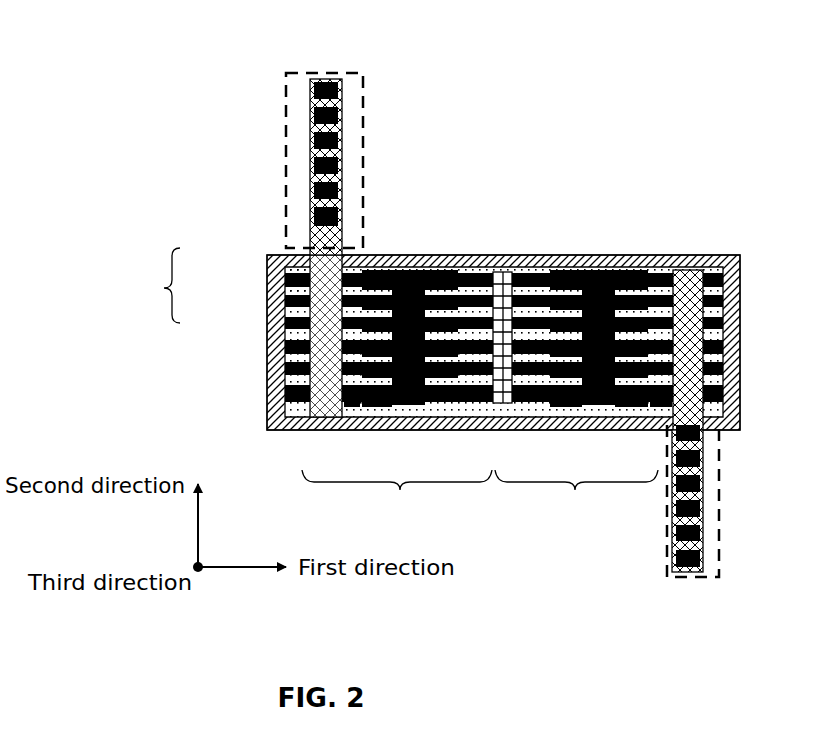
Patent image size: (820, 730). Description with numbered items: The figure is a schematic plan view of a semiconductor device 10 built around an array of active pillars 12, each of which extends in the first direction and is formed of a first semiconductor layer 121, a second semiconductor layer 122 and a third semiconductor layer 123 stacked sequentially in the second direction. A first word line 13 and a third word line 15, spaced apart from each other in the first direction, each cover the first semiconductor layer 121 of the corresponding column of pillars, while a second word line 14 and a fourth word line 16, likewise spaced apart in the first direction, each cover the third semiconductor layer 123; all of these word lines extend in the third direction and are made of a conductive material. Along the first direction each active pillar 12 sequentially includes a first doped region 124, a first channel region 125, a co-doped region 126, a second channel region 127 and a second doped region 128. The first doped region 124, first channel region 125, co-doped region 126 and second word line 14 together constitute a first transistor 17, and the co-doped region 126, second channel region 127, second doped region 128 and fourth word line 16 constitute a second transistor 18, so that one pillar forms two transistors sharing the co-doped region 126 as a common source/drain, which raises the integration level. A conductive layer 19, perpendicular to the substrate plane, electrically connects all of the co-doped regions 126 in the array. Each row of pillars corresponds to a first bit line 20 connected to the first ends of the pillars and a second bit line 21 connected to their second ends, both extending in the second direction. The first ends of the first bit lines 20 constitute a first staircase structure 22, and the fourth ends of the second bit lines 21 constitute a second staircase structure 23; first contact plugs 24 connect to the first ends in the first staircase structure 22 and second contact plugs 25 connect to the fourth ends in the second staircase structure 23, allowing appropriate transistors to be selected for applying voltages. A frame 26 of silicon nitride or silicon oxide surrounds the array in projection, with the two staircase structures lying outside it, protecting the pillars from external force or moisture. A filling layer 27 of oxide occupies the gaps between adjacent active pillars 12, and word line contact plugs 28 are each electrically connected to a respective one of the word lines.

The semiconductor device 10 is at (156, 50).
The active pillar 12 is at (160, 288).
The first semiconductor layer 121 is at (283, 291).
The second semiconductor layer 122 is at (283, 283).
The third semiconductor layer 123 is at (283, 276).
The first word line 13 is at (340, 386).
The second word line 14 is at (340, 344).
The third word line 15 is at (690, 310).
The fourth word line 16 is at (600, 275).
The first transistor 17 is at (397, 493).
The second transistor 18 is at (576, 493).
The conductive layer 19 is at (660, 345).
The first bit line 20 is at (330, 275).
The second bit line 21 is at (692, 378).
The first staircase structure 22 is at (285, 137).
The second staircase structure 23 is at (720, 477).
The first contact plug 24 is at (313, 92).
The second contact plug 25 is at (703, 535).
The frame 26 is at (727, 405).
The filling layer 27 is at (472, 275).
The word line contact plug 28 is at (400, 273).
The first doped region 124 is at (350, 409).
The first channel region 125 is at (383, 409).
The co-doped region 126 is at (500, 409).
The second channel region 127 is at (573, 409).
The second doped region 128 is at (660, 409).